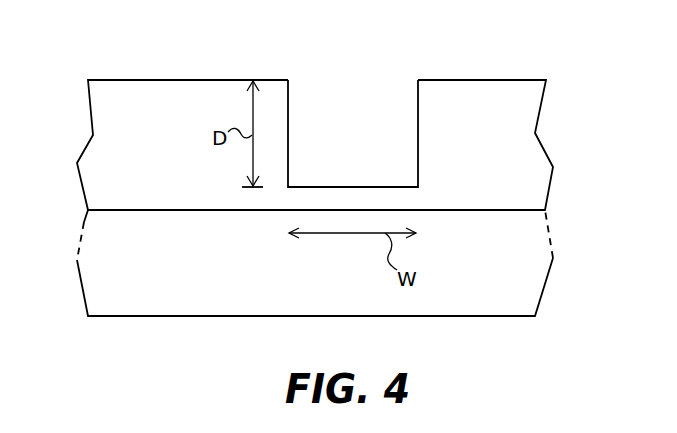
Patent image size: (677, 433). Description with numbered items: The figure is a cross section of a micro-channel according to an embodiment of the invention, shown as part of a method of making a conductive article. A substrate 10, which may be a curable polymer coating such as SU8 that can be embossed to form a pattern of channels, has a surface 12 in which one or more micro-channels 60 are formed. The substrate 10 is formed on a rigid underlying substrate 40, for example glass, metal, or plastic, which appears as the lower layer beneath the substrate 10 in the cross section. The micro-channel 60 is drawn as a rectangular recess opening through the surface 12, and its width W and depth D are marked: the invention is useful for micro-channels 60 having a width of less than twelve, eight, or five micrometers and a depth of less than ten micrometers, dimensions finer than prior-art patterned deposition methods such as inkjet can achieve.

The substrate 10 is at (553, 167).
The surface 12 is at (147, 80).
The underlying substrate 40 is at (553, 258).
The micro-channel 60 is at (385, 60).